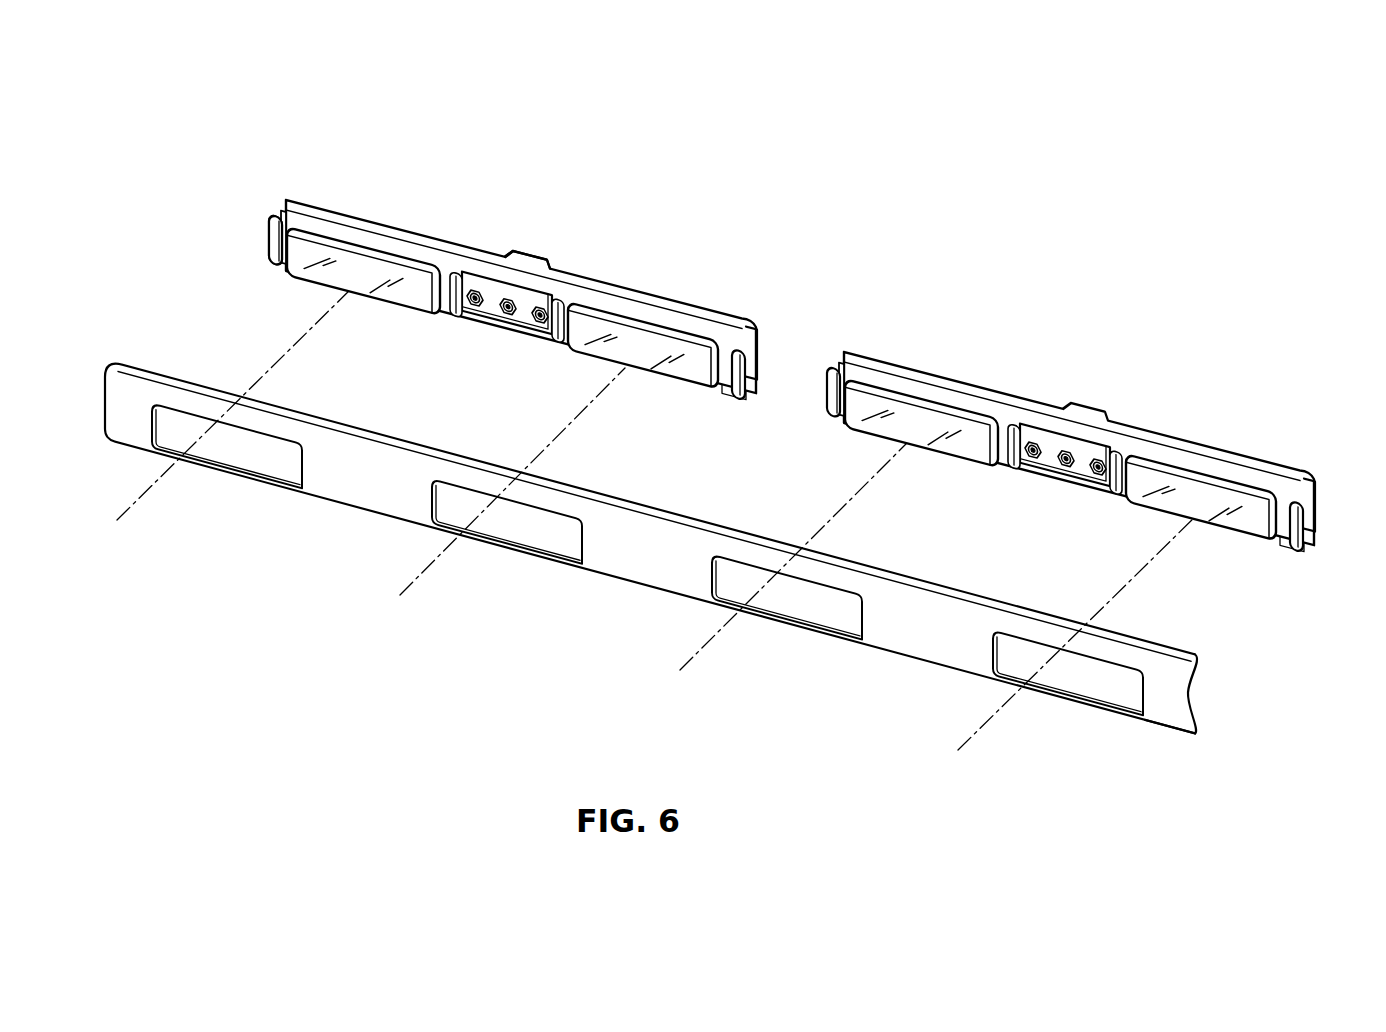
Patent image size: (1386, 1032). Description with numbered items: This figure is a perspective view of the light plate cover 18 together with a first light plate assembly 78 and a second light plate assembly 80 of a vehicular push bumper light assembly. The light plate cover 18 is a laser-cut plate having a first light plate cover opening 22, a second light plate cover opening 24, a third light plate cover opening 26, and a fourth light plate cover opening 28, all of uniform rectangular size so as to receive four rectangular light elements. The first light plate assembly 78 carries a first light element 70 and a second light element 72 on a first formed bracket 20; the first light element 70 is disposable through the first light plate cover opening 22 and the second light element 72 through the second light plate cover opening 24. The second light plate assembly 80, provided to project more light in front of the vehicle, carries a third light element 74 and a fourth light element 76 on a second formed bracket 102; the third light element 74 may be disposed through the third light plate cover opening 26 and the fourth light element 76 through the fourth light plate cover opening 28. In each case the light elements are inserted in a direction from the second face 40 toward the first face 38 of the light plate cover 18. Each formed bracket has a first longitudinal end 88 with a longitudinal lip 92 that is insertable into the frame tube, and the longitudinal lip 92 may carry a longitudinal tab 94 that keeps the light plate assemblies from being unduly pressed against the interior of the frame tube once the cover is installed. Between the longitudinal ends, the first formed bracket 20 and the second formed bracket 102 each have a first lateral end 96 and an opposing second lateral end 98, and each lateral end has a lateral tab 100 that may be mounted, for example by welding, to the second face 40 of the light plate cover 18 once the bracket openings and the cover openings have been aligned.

The light plate cover 18 is at (694, 579).
The first formed bracket 20 is at (484, 295).
The first light plate cover opening 22 is at (232, 452).
The second light plate cover opening 24 is at (520, 526).
The third light plate cover opening 26 is at (803, 610).
The fourth light plate cover opening 28 is at (1085, 690).
The first face 38 is at (1168, 718).
The second face 40 is at (1203, 703).
The first light element 70 is at (383, 285).
The second light element 72 is at (657, 365).
The third light element 74 is at (968, 447).
The fourth light element 76 is at (1233, 524).
The first light plate assembly 78 is at (248, 207).
The second light plate assembly 80 is at (1318, 502).
The first longitudinal end 88 is at (560, 285).
The longitudinal lip 92 is at (400, 230).
The longitudinal tab 94 is at (522, 250).
The first lateral end 96 is at (292, 203).
The second lateral end 98 is at (753, 330).
The lateral tab 100 is at (275, 252).
The second formed bracket 102 is at (945, 380).